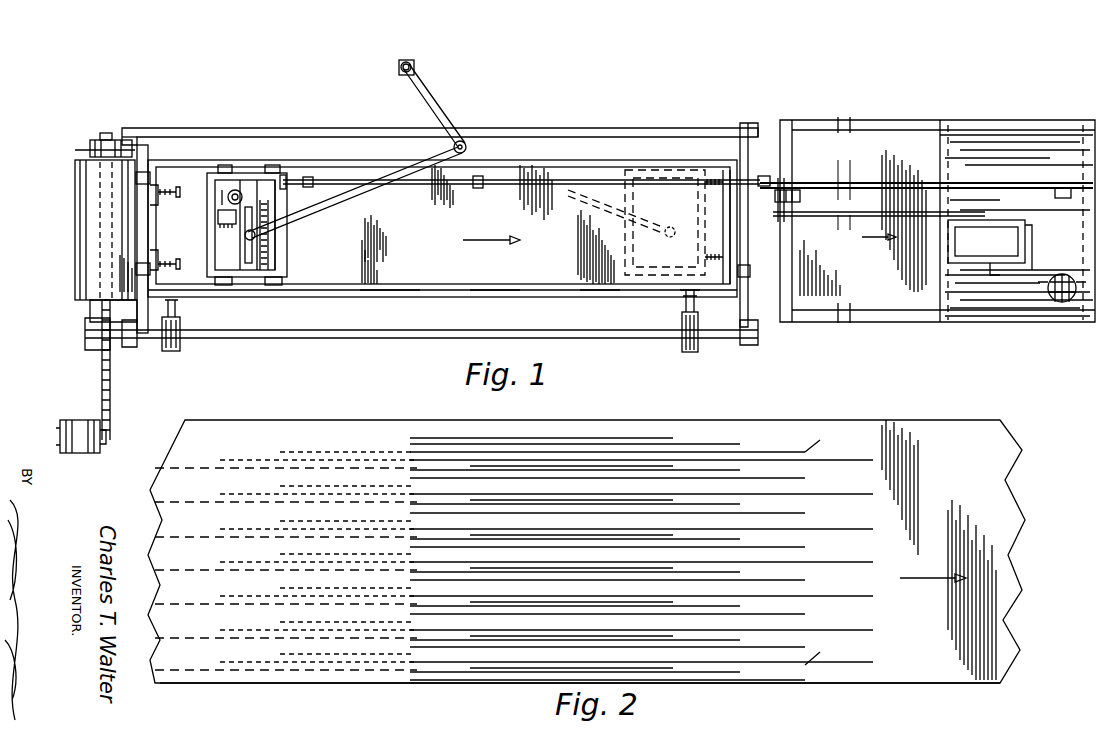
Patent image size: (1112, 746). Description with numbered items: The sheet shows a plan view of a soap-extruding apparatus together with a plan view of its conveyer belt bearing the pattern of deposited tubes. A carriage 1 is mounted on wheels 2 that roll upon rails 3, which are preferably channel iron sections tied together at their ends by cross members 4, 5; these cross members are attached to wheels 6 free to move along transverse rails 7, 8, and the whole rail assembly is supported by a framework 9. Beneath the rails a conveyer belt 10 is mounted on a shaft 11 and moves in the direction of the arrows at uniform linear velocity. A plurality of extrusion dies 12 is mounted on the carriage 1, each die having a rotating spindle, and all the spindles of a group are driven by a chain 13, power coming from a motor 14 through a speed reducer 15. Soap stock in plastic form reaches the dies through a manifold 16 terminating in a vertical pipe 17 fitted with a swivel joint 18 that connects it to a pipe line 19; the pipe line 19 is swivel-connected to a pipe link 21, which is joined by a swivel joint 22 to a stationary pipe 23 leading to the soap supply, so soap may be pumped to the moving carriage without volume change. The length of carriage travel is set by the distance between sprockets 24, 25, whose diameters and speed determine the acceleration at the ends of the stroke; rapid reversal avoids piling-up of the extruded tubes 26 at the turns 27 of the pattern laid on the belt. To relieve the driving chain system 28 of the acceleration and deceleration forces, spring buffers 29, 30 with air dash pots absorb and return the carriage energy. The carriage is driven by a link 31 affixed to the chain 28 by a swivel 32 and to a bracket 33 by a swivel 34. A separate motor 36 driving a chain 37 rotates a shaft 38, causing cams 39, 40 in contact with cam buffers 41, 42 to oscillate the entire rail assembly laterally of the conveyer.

In FIG. 1, the carriage 1 is at (285, 262).
In FIG. 1, the wheels 2 is at (222, 165).
In FIG. 1, the rails 3 is at (595, 162).
In FIG. 1, the cross member 4 is at (735, 212).
In FIG. 1, the cross member 5 is at (156, 210).
In FIG. 1, the wheels 6 is at (140, 178).
In FIG. 1, the rail 7 is at (750, 240).
In FIG. 1, the rail 8 is at (135, 232).
In FIG. 1, the framework 9 is at (132, 128).
In FIG. 1, the conveyer belt 10 is at (522, 256).
In FIG. 1, the shaft 11 is at (108, 133).
In FIG. 1, the extrusion dies 12 is at (272, 240).
In FIG. 1, the chain 13 is at (278, 223).
In FIG. 1, the motor 14 is at (218, 217).
In FIG. 1, the speed reducer 15 is at (240, 188).
In FIG. 1, the manifold 16 is at (255, 277).
In FIG. 1, the vertical pipe 17 is at (248, 250).
In FIG. 1, the swivel joint 18 is at (245, 235).
In FIG. 1, the pipe line 19 is at (366, 191).
In FIG. 1, the pipe link 21 is at (440, 105).
In FIG. 1, the swivel joint 22 is at (418, 65).
In FIG. 1, the stationary pipe 23 is at (406, 60).
In FIG. 1, the sprocket 24 is at (797, 186).
In FIG. 1, the sprocket 25 is at (1063, 188).
In FIG. 2, the extruded tubes 26 is at (168, 470).
In FIG. 2, the turns 27 is at (818, 440).
In FIG. 1, the driving chain system 28 is at (860, 185).
In FIG. 1, the spring buffer 29 is at (178, 188).
In FIG. 1, the spring buffer 30 is at (703, 183).
In FIG. 1, the link 31 is at (468, 178).
In FIG. 1, the swivel 32 is at (764, 176).
In FIG. 1, the bracket 33 is at (285, 176).
In FIG. 1, the swivel 34 is at (290, 186).
In FIG. 1, the motor 36 is at (78, 420).
In FIG. 1, the chain 37 is at (112, 400).
In FIG. 1, the shaft 38 is at (350, 330).
In FIG. 1, the cam 39 is at (178, 352).
In FIG. 1, the cam 40 is at (690, 346).
In FIG. 1, the cam buffer 41 is at (178, 305).
In FIG. 1, the cam buffer 42 is at (690, 298).